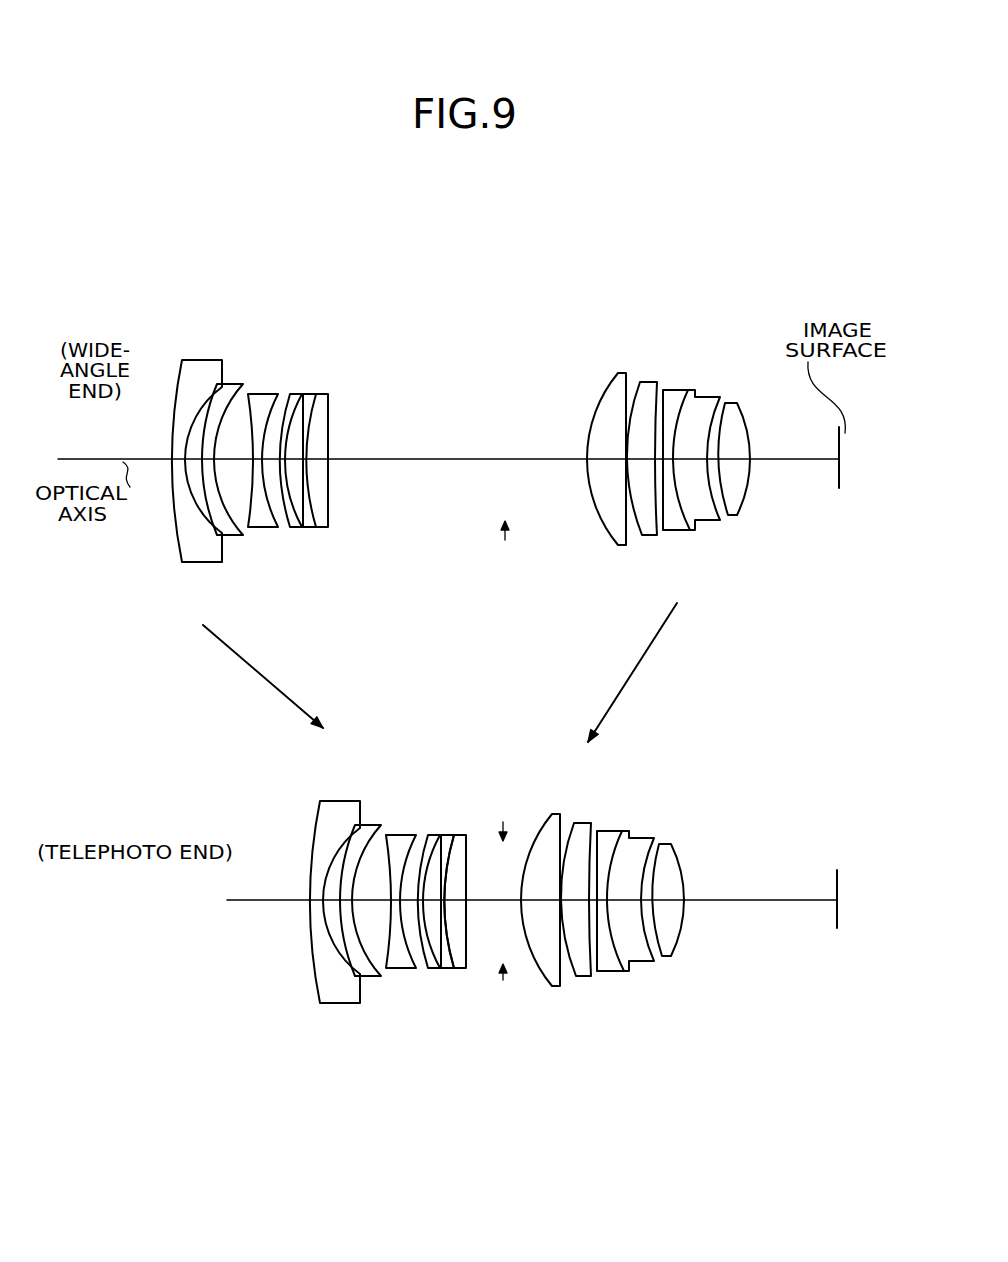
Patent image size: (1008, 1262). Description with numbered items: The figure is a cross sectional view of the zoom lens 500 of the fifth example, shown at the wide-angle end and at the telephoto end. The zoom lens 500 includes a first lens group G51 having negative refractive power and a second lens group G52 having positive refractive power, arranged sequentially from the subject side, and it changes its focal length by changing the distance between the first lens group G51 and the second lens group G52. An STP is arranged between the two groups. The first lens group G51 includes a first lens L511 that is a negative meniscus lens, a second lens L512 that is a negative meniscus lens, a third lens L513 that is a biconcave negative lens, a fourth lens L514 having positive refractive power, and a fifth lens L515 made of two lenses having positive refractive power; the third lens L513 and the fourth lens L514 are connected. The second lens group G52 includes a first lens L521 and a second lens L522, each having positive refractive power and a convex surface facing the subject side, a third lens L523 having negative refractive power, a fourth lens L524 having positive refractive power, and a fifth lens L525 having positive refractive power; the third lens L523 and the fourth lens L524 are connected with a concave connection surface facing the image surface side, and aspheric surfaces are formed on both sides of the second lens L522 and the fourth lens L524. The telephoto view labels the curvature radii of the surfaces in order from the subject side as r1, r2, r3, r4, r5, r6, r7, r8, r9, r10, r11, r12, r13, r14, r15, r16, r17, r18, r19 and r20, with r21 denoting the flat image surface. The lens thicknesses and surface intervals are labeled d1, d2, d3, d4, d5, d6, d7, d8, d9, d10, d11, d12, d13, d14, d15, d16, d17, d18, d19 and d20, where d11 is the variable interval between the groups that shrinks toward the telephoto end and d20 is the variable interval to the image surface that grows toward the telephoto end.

The zoom lens 500 is at (440, 263).
The first lens group G51 is at (338, 297).
The second lens group G52 is at (768, 297).
The first lens L511 is at (207, 368).
The second lens L512 is at (232, 388).
The third lens L513 is at (260, 400).
The fourth lens L514 is at (283, 397).
The fifth lens L515 is at (333, 388).
The element STP is at (505, 398).
The first lens L521 is at (610, 395).
The second lens L522 is at (642, 385).
The third lens L523 is at (668, 388).
The fourth lens L524 is at (703, 400).
The fifth lens L525 is at (732, 403).
The curvature radius r1 is at (318, 816).
The curvature radius r2 is at (348, 828).
The curvature radius r3 is at (356, 828).
The curvature radius r4 is at (378, 828).
The curvature radius r5 is at (392, 834).
The curvature radius r6 is at (412, 834).
The curvature radius r7 is at (426, 834).
The curvature radius r8 is at (438, 834).
The curvature radius r9 is at (442, 834).
The curvature radius r10 is at (455, 834).
The curvature radius r11 is at (467, 836).
The curvature radius r12 is at (553, 820).
The curvature radius r13 is at (560, 816).
The curvature radius r14 is at (575, 825).
The curvature radius r15 is at (591, 825).
The curvature radius r16 is at (598, 833).
The curvature radius r17 is at (622, 833).
The curvature radius r18 is at (655, 840).
The curvature radius r19 is at (660, 846).
The curvature radius r20 is at (672, 848).
The curvature radius r21 is at (837, 870).
The lens thickness d1 is at (316, 903).
The lens surface interval d2 is at (330, 903).
The lens thickness d3 is at (345, 903).
The lens surface interval d4 is at (370, 903).
The lens thickness d5 is at (395, 903).
The lens thickness d6 is at (408, 903).
The lens surface interval d7 is at (421, 903).
The lens thickness d8 is at (433, 903).
The lens surface interval d9 is at (442, 903).
The lens thickness d10 is at (455, 903).
The lens surface interval d11 is at (497, 903).
The lens thickness d12 is at (540, 903).
The lens surface interval d13 is at (561, 903).
The lens thickness d14 is at (575, 903).
The lens surface interval d15 is at (593, 903).
The lens thickness d16 is at (601, 903).
The lens thickness d17 is at (623, 903).
The lens surface interval d18 is at (647, 903).
The lens thickness d19 is at (669, 903).
The lens surface interval d20 is at (776, 903).